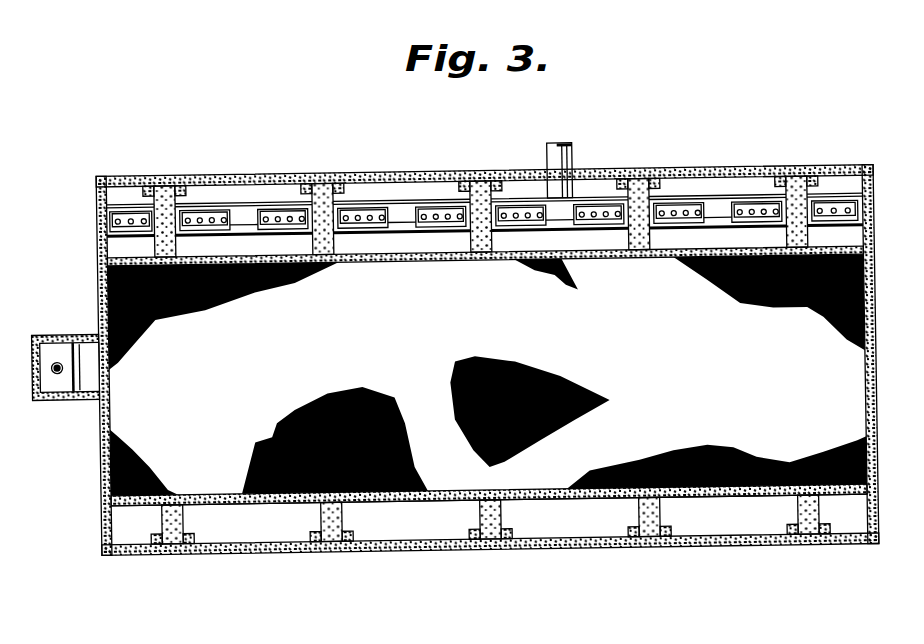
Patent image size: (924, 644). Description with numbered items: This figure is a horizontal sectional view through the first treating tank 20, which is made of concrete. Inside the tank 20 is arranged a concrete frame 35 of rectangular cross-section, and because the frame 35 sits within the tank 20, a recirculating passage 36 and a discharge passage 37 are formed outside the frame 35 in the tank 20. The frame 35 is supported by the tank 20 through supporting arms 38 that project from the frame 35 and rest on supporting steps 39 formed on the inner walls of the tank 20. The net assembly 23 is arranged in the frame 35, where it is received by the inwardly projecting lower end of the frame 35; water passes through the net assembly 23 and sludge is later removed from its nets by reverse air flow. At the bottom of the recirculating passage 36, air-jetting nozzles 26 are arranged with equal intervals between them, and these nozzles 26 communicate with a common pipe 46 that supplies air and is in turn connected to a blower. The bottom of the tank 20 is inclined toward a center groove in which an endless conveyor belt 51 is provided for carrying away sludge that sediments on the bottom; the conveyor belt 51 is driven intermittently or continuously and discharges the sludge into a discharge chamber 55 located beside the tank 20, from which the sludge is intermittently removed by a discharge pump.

The first treating tank 20 is at (877, 416).
The net assembly 23 is at (285, 500).
The air-jetting nozzles 26 is at (274, 209).
The frame 35 is at (758, 497).
The recirculating passage 36 is at (403, 191).
The discharge passage 37 is at (402, 522).
The supporting arms 38 is at (475, 192).
The supporting steps 39 is at (346, 173).
The common pipe 46 is at (572, 208).
The endless conveyor belt 51 is at (88, 334).
The discharge chamber 55 is at (56, 389).